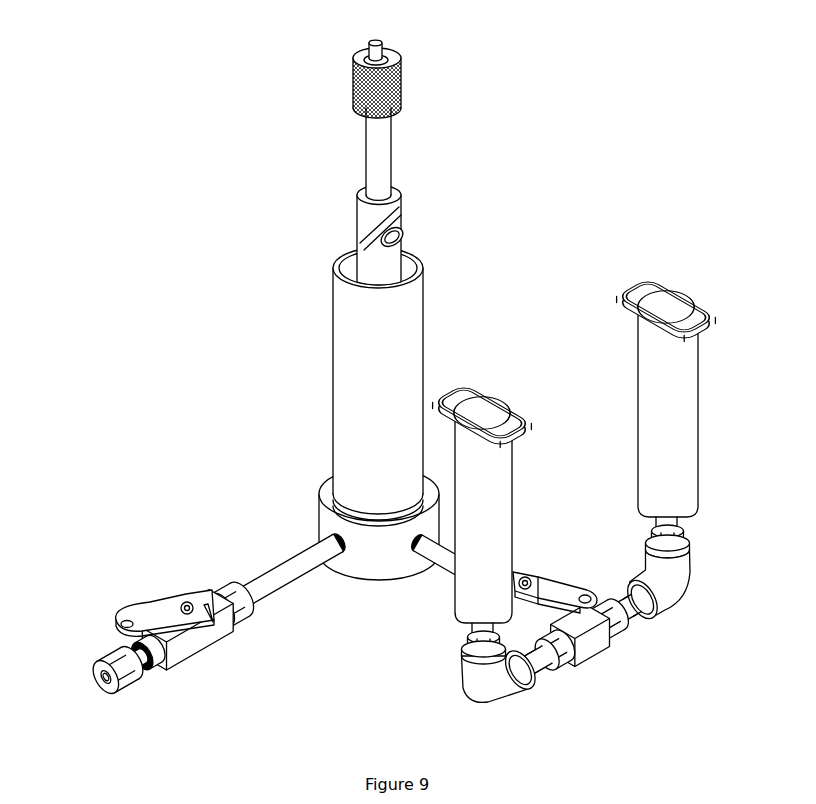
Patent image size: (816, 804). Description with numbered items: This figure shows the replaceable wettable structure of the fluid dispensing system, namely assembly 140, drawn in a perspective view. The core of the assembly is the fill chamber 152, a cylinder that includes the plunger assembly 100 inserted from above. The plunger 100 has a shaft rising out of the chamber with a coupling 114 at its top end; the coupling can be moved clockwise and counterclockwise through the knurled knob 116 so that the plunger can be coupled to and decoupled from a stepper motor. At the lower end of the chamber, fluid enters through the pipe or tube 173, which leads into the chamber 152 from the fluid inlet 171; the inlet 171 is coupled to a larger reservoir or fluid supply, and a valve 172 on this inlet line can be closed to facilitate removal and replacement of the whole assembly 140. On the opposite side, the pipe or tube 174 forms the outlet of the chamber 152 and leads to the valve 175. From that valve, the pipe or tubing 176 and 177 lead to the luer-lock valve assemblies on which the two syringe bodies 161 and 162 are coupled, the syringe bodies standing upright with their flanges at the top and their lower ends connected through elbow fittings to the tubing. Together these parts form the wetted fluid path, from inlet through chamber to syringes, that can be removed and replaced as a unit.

The plunger 100 is at (383, 103).
The coupling 114 is at (382, 38).
The knurled knob 116 is at (400, 92).
The assembly 140 is at (336, 383).
The fill chamber 152 is at (332, 388).
The syringe body 161 is at (472, 610).
The syringe body 162 is at (698, 415).
The fluid inlet 171 is at (107, 690).
The valve 172 is at (203, 652).
The pipe or tube 173 is at (287, 558).
The pipe or tube 174 is at (438, 553).
The valve 175 is at (540, 578).
The pipe or tubing 176 is at (540, 672).
The pipe or tubing 177 is at (650, 622).